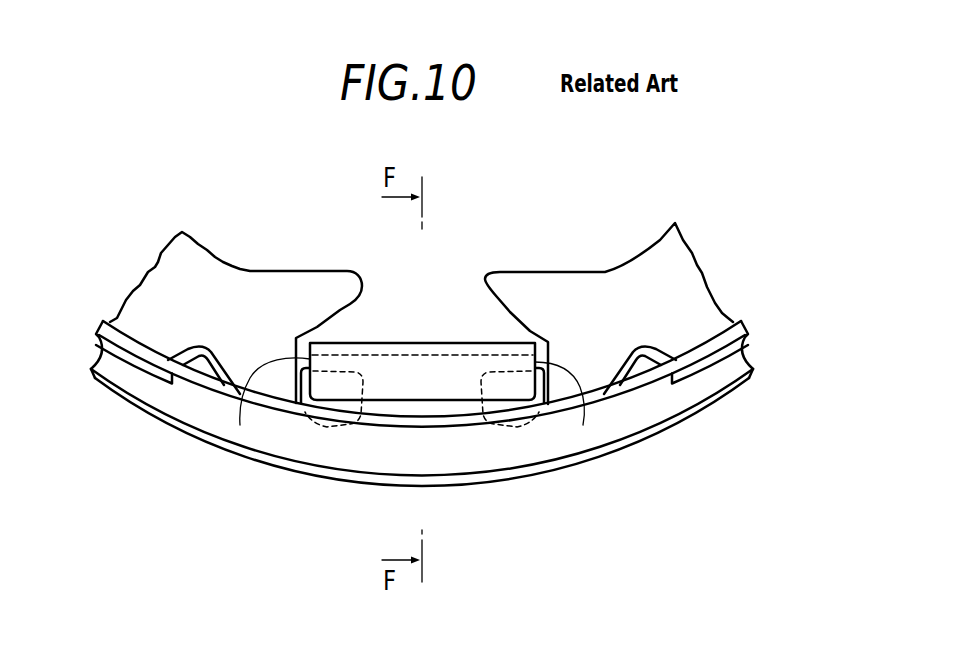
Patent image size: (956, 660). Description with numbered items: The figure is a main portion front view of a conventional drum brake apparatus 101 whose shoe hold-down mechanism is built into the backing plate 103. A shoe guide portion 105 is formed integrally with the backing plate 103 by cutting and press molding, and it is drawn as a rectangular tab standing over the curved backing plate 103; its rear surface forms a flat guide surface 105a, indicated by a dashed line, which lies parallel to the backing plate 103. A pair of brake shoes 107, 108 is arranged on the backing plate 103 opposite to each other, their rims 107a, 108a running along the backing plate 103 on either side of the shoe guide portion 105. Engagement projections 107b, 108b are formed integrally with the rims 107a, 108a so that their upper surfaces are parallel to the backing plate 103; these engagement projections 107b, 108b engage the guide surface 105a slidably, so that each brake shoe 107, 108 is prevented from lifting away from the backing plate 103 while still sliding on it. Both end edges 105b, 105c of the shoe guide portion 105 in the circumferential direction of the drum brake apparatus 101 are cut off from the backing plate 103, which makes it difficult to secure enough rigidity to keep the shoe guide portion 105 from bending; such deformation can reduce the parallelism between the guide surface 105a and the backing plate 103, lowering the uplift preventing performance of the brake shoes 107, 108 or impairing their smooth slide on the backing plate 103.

The drum brake apparatus 101 is at (132, 410).
The backing plate 103 is at (403, 470).
The shoe guide portion 105 is at (443, 395).
The guide surface 105a is at (466, 388).
The end edge of shoe guide portion 105b is at (583, 425).
The end edge of shoe guide portion 105c is at (240, 425).
The brake shoe 107 is at (278, 290).
The rim 107a is at (237, 395).
The engagement projection 107b is at (298, 399).
The brake shoe 108 is at (548, 292).
The rim 108a is at (607, 398).
The engagement projection 108b is at (546, 400).